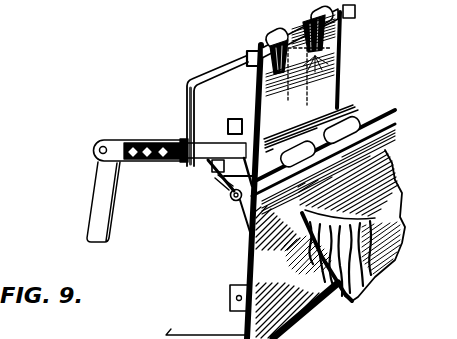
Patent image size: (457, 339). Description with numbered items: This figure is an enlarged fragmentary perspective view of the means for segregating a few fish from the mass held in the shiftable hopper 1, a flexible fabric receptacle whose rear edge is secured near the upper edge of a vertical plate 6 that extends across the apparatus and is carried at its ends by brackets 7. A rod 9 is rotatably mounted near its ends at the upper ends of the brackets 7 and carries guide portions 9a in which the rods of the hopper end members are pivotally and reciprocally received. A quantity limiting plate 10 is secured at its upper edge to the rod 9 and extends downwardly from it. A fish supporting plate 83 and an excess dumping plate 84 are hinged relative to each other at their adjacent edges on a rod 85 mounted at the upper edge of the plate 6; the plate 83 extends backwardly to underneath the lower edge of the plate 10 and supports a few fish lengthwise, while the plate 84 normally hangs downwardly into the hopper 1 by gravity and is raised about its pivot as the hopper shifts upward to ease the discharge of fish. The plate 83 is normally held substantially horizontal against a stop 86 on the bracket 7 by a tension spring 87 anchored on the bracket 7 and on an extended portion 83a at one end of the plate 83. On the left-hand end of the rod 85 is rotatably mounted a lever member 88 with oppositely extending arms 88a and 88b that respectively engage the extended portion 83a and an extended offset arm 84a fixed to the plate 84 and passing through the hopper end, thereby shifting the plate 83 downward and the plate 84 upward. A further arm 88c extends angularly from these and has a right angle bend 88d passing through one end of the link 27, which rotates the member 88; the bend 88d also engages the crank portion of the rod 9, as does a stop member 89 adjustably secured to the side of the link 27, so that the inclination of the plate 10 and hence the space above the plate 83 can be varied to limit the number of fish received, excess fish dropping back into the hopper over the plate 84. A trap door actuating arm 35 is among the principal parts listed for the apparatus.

The hopper 1 is at (309, 272).
The vertical plate 6 is at (255, 268).
The brackets 7 is at (202, 338).
The rod 9 is at (205, 73).
The guide portions 9a is at (256, 47).
The quantity limiting plate 10 is at (340, 44).
The link 27 is at (94, 149).
The trap door actuating arm 35 is at (350, 22).
The fish supporting plate 83 is at (338, 108).
The extended portion 83a is at (229, 178).
The excess dumping plate 84 is at (394, 111).
The extended offset arm 84a is at (276, 197).
The rod 85 is at (380, 110).
The stop 86 is at (270, 132).
The tension spring 87 is at (232, 127).
The lever member 88 is at (248, 222).
The arm 88a is at (240, 200).
The arm 88b is at (249, 232).
The arm 88c is at (226, 192).
The right angle bend 88d is at (222, 168).
The stop member 89 is at (138, 138).